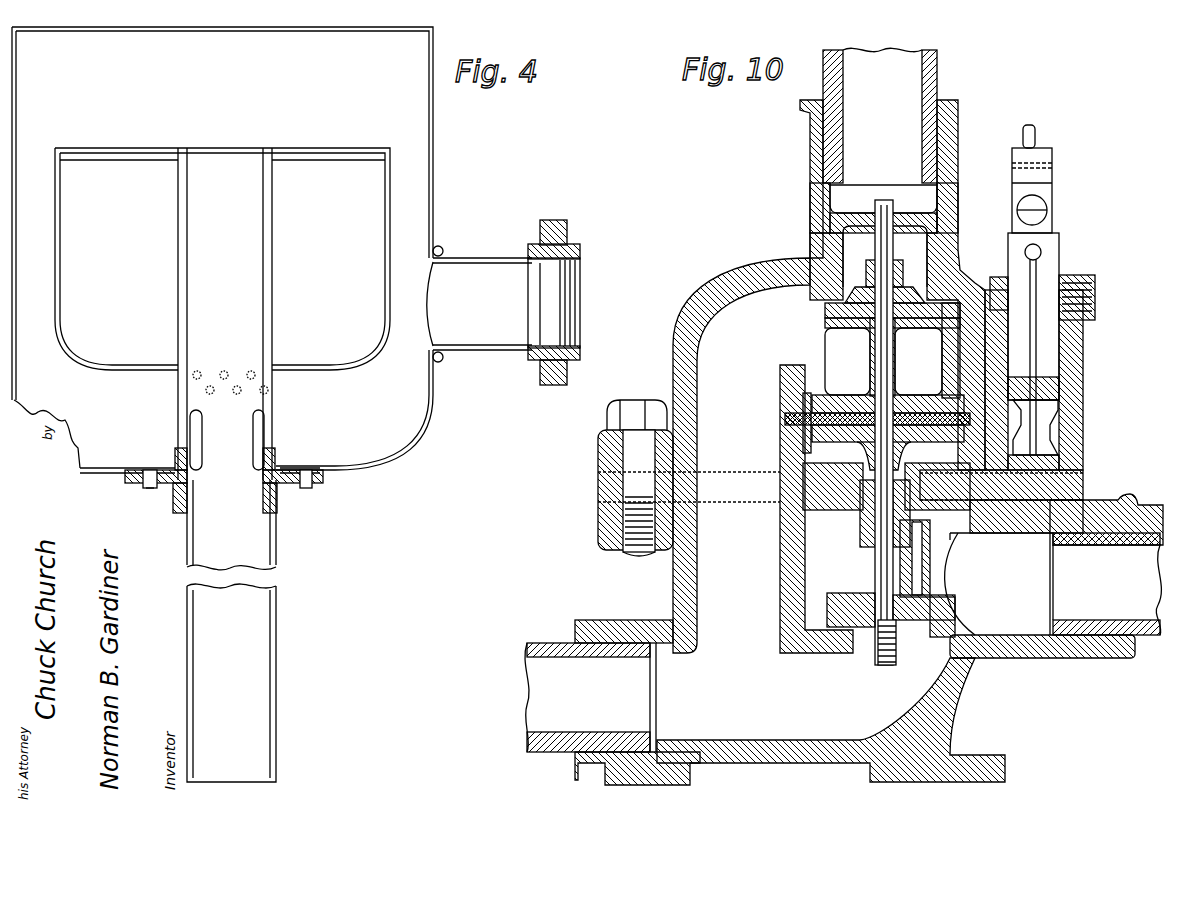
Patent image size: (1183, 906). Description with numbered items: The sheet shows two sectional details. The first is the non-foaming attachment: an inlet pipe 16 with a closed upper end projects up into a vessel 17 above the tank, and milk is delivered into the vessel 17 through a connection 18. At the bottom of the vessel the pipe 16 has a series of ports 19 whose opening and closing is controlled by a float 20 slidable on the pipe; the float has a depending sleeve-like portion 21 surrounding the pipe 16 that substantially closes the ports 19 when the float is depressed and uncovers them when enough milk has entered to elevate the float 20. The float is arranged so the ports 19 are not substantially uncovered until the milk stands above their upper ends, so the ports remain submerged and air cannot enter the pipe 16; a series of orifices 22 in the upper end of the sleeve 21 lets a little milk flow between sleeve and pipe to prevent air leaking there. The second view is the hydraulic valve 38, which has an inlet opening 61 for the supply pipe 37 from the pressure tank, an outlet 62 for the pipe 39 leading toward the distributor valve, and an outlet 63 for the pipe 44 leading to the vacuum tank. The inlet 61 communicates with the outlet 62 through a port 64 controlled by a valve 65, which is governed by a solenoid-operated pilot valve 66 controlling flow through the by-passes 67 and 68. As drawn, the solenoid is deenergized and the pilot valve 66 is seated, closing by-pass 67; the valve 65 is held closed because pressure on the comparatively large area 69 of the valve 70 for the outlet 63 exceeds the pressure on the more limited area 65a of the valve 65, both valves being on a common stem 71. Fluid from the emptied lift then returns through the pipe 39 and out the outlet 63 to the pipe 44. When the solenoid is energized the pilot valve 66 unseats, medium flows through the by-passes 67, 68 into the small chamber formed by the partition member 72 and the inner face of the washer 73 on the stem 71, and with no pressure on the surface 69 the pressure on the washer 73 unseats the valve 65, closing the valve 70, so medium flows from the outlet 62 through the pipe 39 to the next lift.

In FIG. 4, the inlet pipe 16 is at (270, 568).
In FIG. 4, the vessel 17 is at (436, 178).
In FIG. 4, the connection 18 is at (503, 258).
In FIG. 4, the ports 19 is at (250, 447).
In FIG. 4, the float 20 is at (310, 148).
In FIG. 4, the sleeve-like portion 21 is at (275, 402).
In FIG. 4, the orifices 22 is at (185, 380).
In FIG. 10, the pipe 37 is at (1146, 530).
In FIG. 10, the hydraulic valve 38 is at (700, 312).
In FIG. 10, the pipe 39 is at (551, 660).
In FIG. 10, the pipe 44 is at (878, 62).
In FIG. 10, the inlet opening 61 is at (1018, 636).
In FIG. 10, the outlet 62 is at (656, 665).
In FIG. 10, the outlet 63 is at (832, 192).
In FIG. 10, the port 64 is at (908, 650).
In FIG. 10, the valve 65 is at (957, 606).
In FIG. 10, the limited area 65a is at (940, 610).
In FIG. 10, the pilot valve 66 is at (1060, 430).
In FIG. 10, the by-pass 67 is at (1040, 487).
In FIG. 10, the by-pass 68 is at (975, 440).
In FIG. 10, the large area 69 is at (850, 395).
In FIG. 10, the valve 70 is at (892, 350).
In FIG. 10, the valve stem 71 is at (900, 347).
In FIG. 10, the partition member 72 is at (803, 486).
In FIG. 10, the washer 73 is at (937, 445).